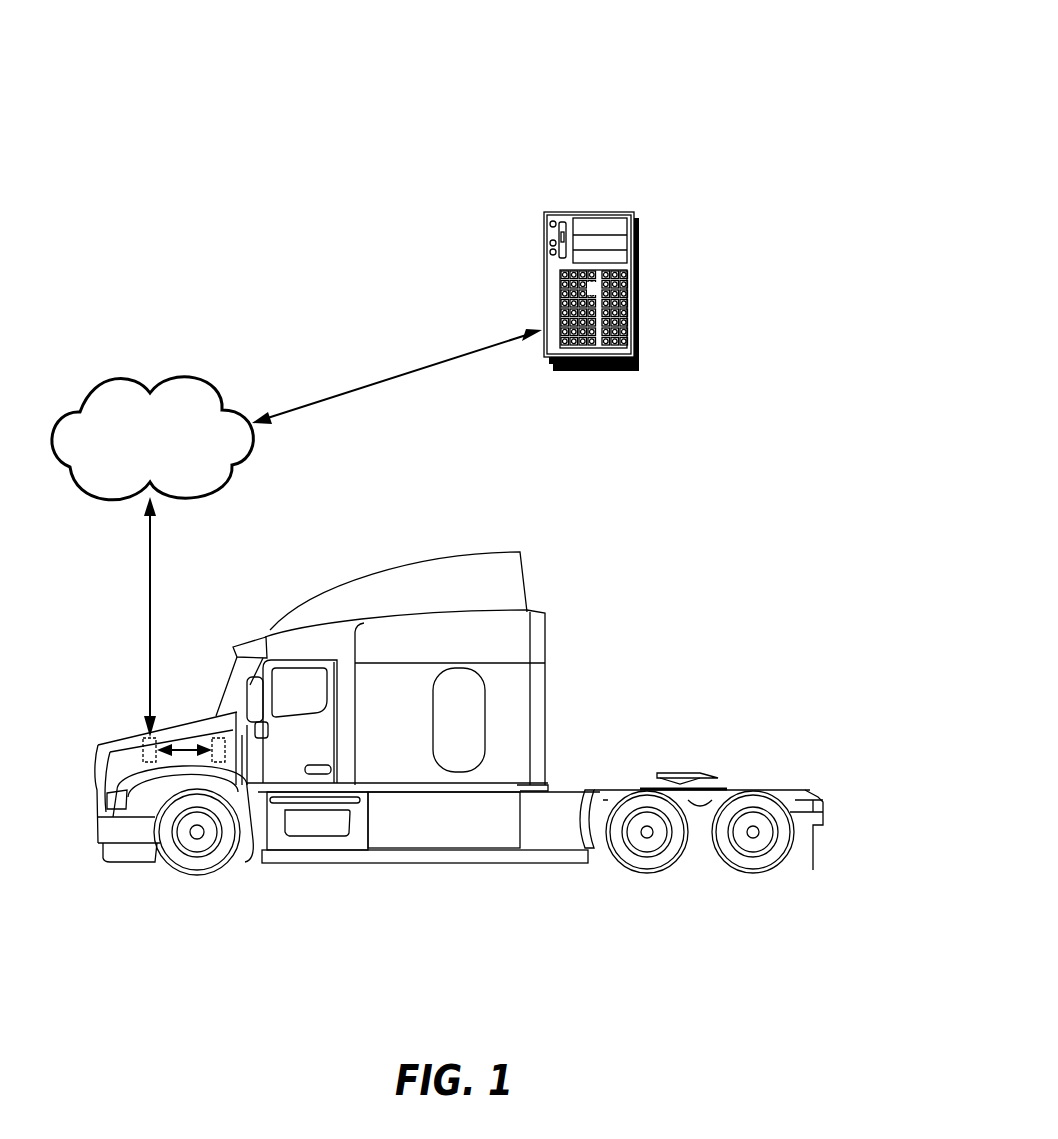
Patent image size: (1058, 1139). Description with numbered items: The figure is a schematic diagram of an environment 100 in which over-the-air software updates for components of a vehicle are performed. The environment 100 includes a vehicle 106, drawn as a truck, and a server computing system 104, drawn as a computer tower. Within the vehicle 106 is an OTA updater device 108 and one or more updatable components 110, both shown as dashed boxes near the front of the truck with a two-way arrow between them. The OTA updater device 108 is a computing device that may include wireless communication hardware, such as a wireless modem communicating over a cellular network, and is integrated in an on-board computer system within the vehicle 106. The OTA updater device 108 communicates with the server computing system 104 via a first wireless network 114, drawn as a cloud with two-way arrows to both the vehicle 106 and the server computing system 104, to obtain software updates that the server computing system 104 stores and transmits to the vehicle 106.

The environment 100 is at (721, 47).
The server computing system 104 is at (618, 370).
The vehicle 106 is at (447, 863).
The OTA updater device 108 is at (140, 745).
The updatable components 110 is at (219, 738).
The first wireless network 114 is at (250, 467).